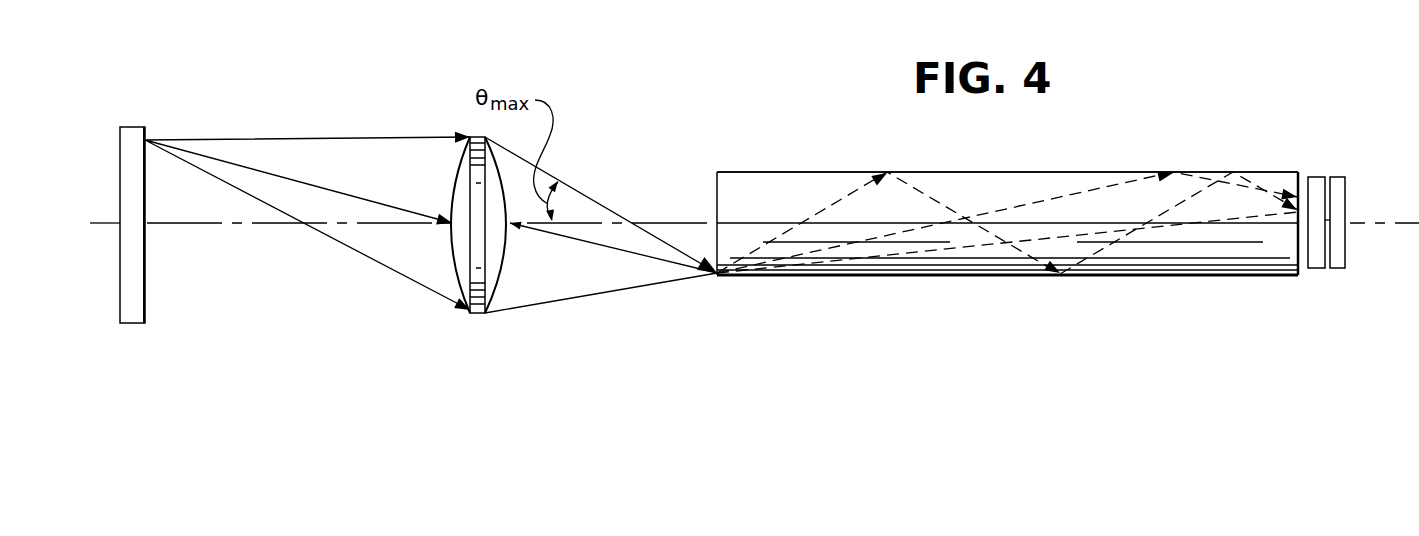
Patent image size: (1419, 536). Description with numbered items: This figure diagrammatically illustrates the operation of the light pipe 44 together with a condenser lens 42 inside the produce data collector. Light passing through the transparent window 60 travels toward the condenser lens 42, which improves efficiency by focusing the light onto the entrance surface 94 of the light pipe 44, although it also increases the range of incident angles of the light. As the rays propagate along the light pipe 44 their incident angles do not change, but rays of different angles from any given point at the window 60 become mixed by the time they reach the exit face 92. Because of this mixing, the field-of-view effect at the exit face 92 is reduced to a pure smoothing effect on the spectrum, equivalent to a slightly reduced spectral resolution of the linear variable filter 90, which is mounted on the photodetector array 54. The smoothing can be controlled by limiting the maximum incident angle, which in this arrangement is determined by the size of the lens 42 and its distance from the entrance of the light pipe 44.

The transparent window 60 is at (133, 323).
The condenser lens 42 is at (480, 313).
The light pipe 44 is at (928, 277).
The entrance surface 94 is at (717, 190).
The exit face 92 is at (1300, 277).
The linear variable filter 90 is at (1317, 177).
The photodetector array 54 is at (1345, 187).